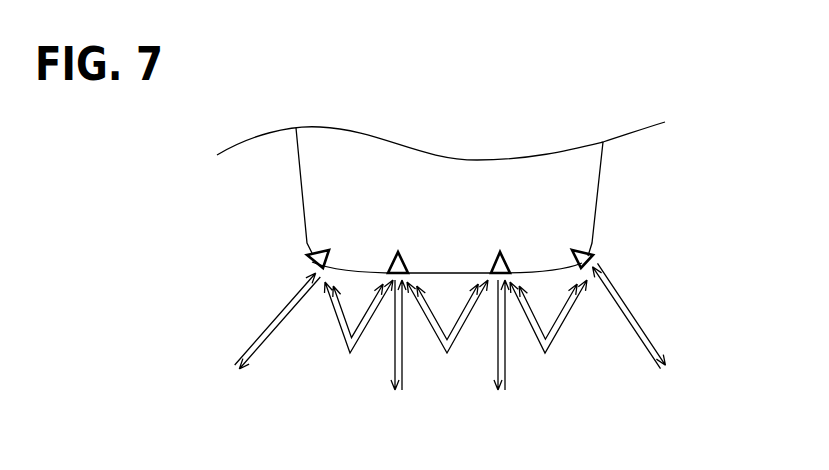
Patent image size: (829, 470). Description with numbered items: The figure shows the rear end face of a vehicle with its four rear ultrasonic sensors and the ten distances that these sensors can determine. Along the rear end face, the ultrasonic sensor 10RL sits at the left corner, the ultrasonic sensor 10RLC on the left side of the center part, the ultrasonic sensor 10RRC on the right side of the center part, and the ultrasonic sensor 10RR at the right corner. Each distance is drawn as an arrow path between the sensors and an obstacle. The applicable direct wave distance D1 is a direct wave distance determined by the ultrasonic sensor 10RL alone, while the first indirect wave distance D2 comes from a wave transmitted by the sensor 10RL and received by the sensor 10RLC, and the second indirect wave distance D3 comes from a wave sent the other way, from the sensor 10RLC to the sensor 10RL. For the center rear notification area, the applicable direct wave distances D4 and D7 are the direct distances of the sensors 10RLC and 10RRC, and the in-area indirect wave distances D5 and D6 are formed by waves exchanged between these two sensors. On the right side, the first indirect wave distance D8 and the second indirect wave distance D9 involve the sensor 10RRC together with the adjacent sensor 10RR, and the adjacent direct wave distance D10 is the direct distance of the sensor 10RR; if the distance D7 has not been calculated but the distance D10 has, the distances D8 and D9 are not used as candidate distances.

The ultrasonic sensor 10RL is at (307, 253).
The ultrasonic sensor 10RLC is at (396, 253).
The ultrasonic sensor 10RRC is at (505, 255).
The ultrasonic sensor 10RR is at (589, 253).
The applicable direct wave distance D1 is at (268, 337).
The first indirect wave distance D2 is at (359, 333).
The second indirect wave distance D3 is at (343, 312).
The applicable direct wave distance D4 is at (394, 352).
The in-area indirect wave distance D5 is at (447, 334).
The in-area indirect wave distance D6 is at (457, 312).
The applicable direct wave distance D7 is at (495, 352).
The first indirect wave distance D8 is at (548, 334).
The second indirect wave distance D9 is at (538, 312).
The adjacent direct wave distance D10 is at (647, 332).